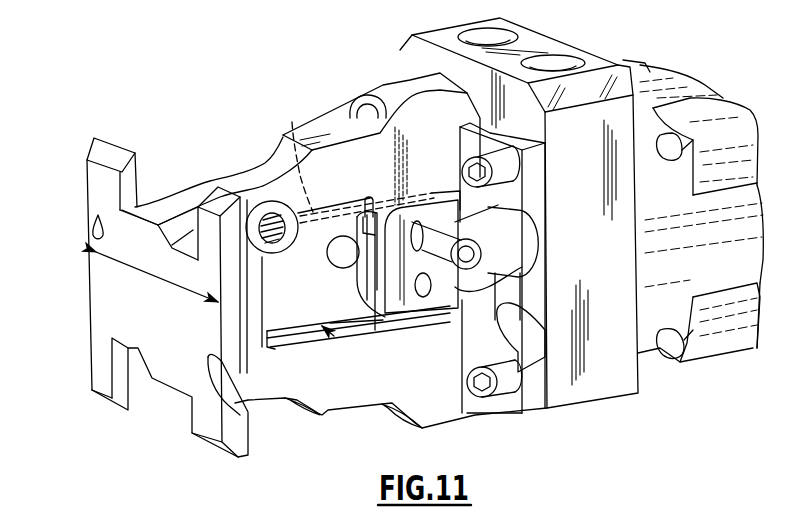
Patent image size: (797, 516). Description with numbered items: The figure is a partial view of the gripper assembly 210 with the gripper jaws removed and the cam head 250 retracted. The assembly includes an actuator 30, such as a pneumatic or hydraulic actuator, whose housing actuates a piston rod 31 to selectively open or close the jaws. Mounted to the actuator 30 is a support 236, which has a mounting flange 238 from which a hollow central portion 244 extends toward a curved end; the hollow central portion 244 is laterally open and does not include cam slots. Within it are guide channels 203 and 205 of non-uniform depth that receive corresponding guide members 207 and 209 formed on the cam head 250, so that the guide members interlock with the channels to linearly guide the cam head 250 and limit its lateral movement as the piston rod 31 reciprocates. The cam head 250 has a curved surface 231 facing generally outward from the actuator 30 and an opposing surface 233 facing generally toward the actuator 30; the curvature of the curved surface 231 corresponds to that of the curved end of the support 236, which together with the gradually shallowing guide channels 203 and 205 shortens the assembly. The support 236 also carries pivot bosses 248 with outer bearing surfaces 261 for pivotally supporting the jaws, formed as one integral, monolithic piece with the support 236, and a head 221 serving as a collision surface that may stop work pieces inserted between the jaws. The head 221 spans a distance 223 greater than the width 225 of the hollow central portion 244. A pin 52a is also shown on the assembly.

The actuator 30 is at (710, 363).
The piston rod 31 is at (514, 212).
The pin 52a is at (538, 258).
The guide channel 203 is at (293, 347).
The guide channel 205 is at (292, 120).
The guide member 207 is at (378, 327).
The guide member 209 is at (371, 218).
The gripper assembly 210 is at (136, 327).
The head 221 is at (107, 307).
The distance 223 is at (96, 253).
The width 225 is at (341, 331).
The curved surface 231 is at (353, 253).
The opposing surface 233 is at (500, 188).
The support 236 is at (341, 235).
The mounting flange 238 is at (528, 291).
The hollow central portion 244 is at (272, 268).
The pivot boss 248 is at (230, 187).
The cam head 250 is at (348, 282).
The outer bearing surface 261 is at (240, 186).